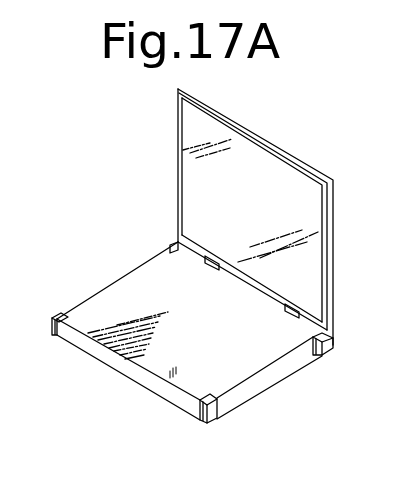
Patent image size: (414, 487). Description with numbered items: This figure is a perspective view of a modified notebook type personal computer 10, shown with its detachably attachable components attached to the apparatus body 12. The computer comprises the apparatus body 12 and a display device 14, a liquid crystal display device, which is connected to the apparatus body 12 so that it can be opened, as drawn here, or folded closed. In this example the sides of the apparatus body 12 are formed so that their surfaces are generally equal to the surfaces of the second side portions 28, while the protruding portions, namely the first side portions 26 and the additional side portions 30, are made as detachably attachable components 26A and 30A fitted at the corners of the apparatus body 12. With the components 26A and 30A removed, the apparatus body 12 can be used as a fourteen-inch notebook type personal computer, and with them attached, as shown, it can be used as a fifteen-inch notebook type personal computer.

The notebook type personal computer 10 is at (313, 137).
The apparatus body 12 is at (247, 360).
The display device 14 is at (303, 220).
The first side portion 26 is at (210, 421).
The detachably attachable component 26A is at (200, 412).
The second side portion 28 is at (235, 392).
The additional side portion 30 is at (327, 350).
The detachably attachable component 30A is at (310, 353).